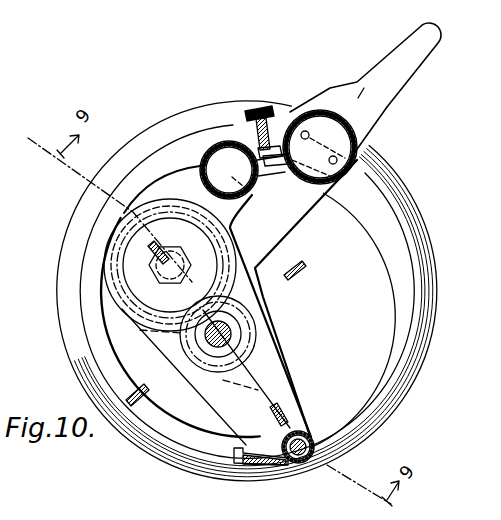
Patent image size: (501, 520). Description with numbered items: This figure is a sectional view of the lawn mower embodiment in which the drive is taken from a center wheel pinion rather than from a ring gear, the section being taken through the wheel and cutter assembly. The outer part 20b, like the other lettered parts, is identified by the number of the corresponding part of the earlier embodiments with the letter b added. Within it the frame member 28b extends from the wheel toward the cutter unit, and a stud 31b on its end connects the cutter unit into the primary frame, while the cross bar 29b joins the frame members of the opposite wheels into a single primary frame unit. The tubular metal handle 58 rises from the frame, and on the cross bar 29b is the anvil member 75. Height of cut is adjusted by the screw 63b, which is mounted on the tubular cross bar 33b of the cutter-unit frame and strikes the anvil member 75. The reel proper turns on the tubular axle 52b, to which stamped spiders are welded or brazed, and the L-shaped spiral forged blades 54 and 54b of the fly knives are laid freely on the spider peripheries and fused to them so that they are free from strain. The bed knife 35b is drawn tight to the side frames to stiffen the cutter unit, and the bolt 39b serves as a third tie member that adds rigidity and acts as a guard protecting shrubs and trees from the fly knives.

The housing 20b is at (430, 328).
The frame member 28b is at (277, 318).
The cross bar 29b is at (350, 170).
The handle 58 is at (405, 76).
The anvil member 75 is at (304, 106).
The screw 63b is at (268, 103).
The tubular cross bar 33b is at (199, 170).
The stud 31b is at (176, 266).
The tubular axle 52b is at (231, 312).
The bed knife 35b is at (310, 433).
The bolt 39b is at (281, 377).
The spiral forged blades 54 is at (305, 272).
The spiral forged blades 54b is at (140, 386).